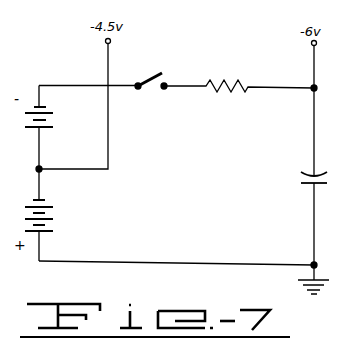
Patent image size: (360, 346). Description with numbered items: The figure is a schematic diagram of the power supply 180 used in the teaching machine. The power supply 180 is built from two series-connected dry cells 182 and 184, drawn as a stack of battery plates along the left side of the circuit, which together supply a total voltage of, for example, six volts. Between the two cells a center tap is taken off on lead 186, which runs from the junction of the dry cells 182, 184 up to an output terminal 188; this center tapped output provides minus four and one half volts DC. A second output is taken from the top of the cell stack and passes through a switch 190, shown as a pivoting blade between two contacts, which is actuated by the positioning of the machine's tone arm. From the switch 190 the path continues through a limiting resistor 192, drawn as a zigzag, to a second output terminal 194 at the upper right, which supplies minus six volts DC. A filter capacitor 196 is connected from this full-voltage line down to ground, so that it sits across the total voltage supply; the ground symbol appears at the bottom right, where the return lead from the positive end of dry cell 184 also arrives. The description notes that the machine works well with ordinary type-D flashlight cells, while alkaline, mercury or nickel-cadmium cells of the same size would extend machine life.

The power supply 180 is at (187, 188).
The dry cell 182 is at (50, 121).
The dry cell 184 is at (52, 215).
The lead 186 is at (109, 157).
The output terminal 188 is at (111, 42).
The switch 190 is at (156, 70).
The limiting resistor 192 is at (237, 96).
The output terminal 194 is at (311, 45).
The filter capacitor 196 is at (298, 183).